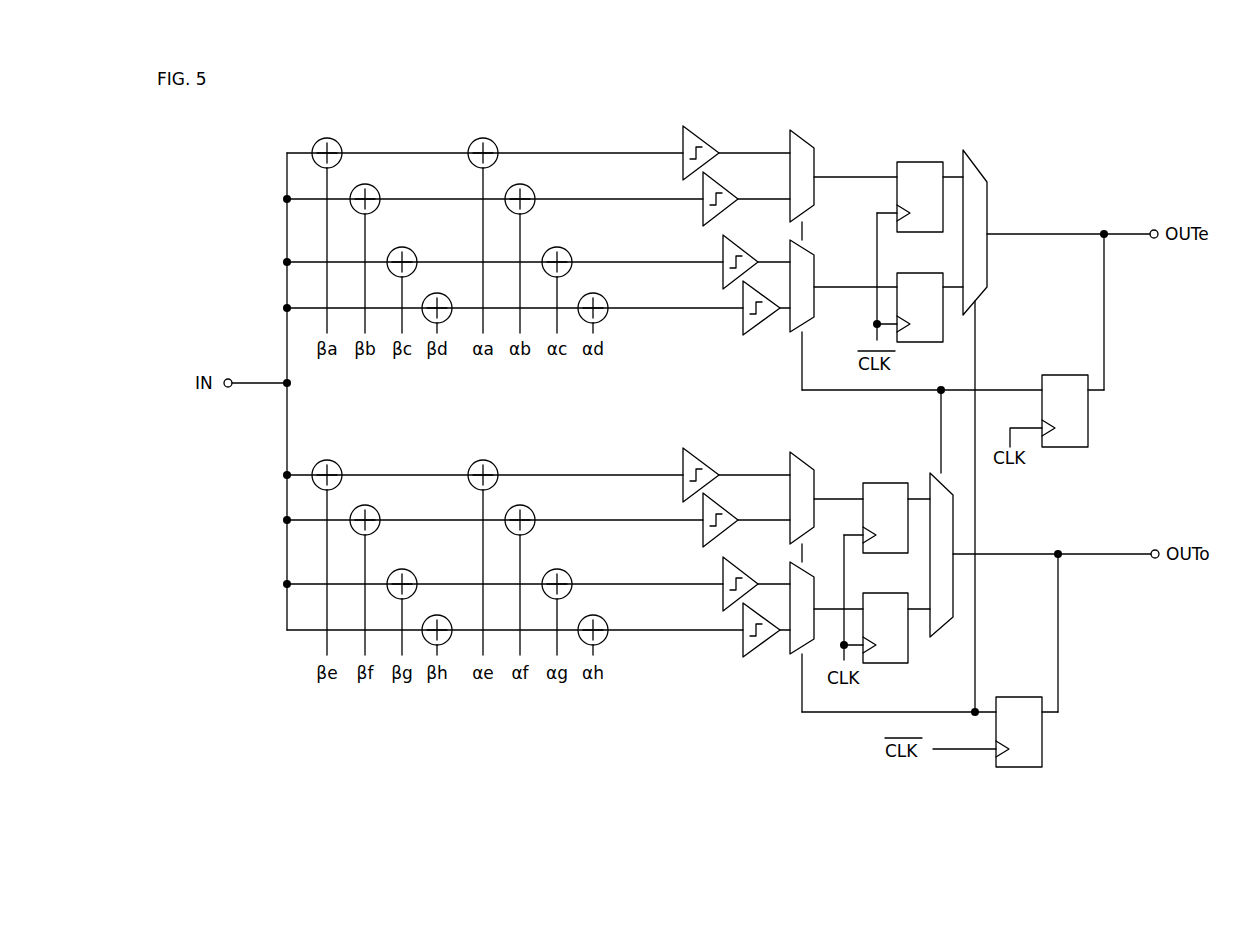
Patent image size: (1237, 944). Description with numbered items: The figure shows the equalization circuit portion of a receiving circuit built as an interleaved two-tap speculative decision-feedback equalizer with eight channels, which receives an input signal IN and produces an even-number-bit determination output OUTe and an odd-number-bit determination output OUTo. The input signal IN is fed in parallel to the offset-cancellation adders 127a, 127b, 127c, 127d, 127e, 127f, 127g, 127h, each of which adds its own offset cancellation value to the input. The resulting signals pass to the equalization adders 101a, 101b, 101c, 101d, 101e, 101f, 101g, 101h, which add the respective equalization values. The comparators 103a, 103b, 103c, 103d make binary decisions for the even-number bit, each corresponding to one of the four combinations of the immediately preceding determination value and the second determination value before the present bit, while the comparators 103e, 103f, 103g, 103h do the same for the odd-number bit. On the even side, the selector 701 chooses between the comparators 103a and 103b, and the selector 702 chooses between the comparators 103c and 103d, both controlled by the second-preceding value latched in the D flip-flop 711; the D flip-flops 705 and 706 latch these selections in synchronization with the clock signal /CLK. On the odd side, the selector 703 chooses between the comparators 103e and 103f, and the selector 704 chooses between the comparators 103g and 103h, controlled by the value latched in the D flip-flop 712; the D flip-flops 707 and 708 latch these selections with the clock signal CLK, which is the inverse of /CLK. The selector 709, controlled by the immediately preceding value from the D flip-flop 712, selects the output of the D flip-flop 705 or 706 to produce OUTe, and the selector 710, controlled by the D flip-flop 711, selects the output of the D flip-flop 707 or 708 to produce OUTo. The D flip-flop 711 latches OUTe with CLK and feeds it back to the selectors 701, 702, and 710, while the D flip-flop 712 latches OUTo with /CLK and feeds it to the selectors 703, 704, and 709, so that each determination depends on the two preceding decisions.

The first adder 127a is at (338, 141).
The third adder 127b is at (376, 187).
The fifth adder 127c is at (413, 251).
The seventh adder 127d is at (448, 297).
The ninth adder 127e is at (338, 464).
The eleventh adder 127f is at (376, 508).
The thirteenth adder 127g is at (413, 573).
The fifteenth adder 127h is at (448, 619).
The second adder 101a is at (494, 141).
The fourth adder 101b is at (531, 187).
The sixth adder 101c is at (568, 251).
The eighth adder 101d is at (604, 297).
The tenth adder 101e is at (494, 464).
The twelfth adder 101f is at (531, 508).
The fourteenth adder 101g is at (568, 573).
The sixteenth adder 101h is at (604, 619).
The first comparator 103a is at (683, 172).
The second comparator 103b is at (703, 216).
The third comparator 103c is at (723, 281).
The fourth comparator 103d is at (743, 326).
The fifth comparator 103e is at (683, 494).
The sixth comparator 103f is at (703, 538).
The seventh comparator 103g is at (723, 603).
The eighth comparator 103h is at (743, 648).
The selector 701 is at (808, 135).
The selector 702 is at (810, 252).
The selector 703 is at (788, 456).
The selector 704 is at (788, 650).
The D flip-flop 705 is at (921, 162).
The D flip-flop 706 is at (915, 342).
The D flip-flop 707 is at (874, 483).
The D flip-flop 708 is at (885, 663).
The selector 709 is at (981, 171).
The selector 710 is at (934, 470).
The D flip-flop 711 is at (1067, 375).
The D flip-flop 712 is at (1018, 697).